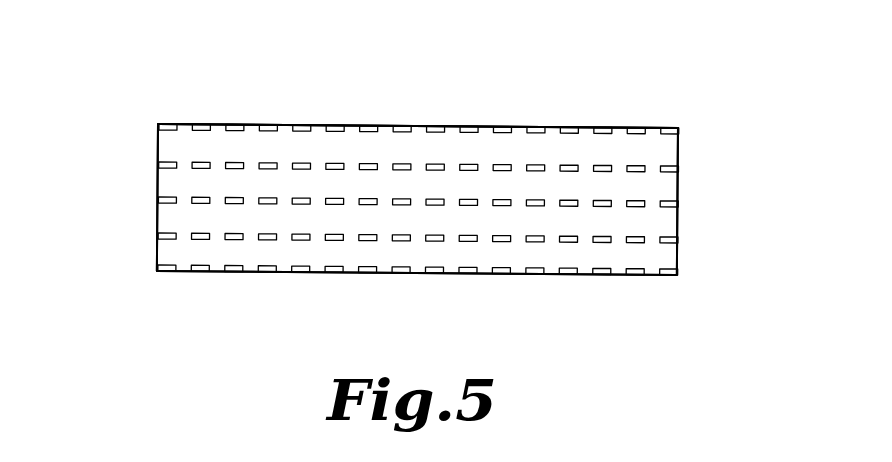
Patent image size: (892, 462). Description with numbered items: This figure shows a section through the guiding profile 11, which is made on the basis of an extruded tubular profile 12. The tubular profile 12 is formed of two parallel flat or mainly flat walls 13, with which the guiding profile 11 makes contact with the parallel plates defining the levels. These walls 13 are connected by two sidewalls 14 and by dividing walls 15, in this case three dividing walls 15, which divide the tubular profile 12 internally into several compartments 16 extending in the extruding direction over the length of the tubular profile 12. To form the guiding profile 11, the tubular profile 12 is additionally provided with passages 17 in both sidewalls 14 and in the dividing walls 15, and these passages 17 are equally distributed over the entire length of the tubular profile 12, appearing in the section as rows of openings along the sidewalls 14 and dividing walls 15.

The guiding profile 11 is at (535, 64).
The tubular profile 12 is at (378, 124).
The flat walls 13 is at (453, 154).
The sidewalls 14 is at (243, 125).
The dividing walls 15 is at (670, 238).
The compartments 16 is at (162, 248).
The passages 17 is at (655, 128).